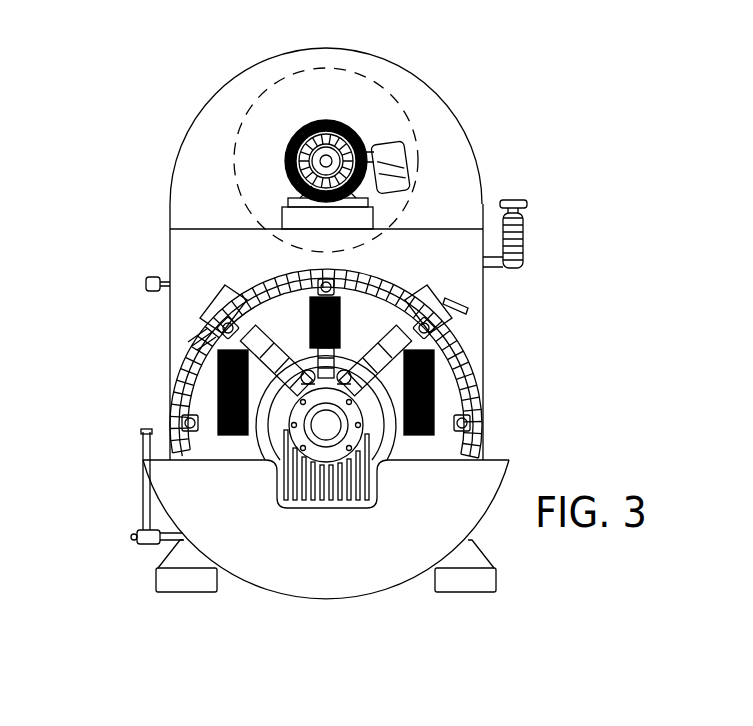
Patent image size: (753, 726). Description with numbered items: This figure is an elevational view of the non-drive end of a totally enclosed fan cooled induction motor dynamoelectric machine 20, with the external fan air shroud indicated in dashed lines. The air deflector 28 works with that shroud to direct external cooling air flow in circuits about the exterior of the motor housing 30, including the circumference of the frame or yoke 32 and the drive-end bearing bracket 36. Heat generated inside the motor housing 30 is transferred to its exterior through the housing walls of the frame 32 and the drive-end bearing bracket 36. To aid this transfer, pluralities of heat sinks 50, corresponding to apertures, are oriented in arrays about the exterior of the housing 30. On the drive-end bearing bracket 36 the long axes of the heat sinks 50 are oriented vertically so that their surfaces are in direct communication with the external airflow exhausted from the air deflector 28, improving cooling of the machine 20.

The totally enclosed fan cooled induction motor dynamoelectric machine 20 is at (471, 76).
The air deflector 28 is at (252, 542).
The motor housing 30 is at (521, 347).
The frame or yoke 32 is at (485, 383).
The drive-end bearing bracket 36 is at (373, 327).
The heat sinks 50 is at (307, 303).